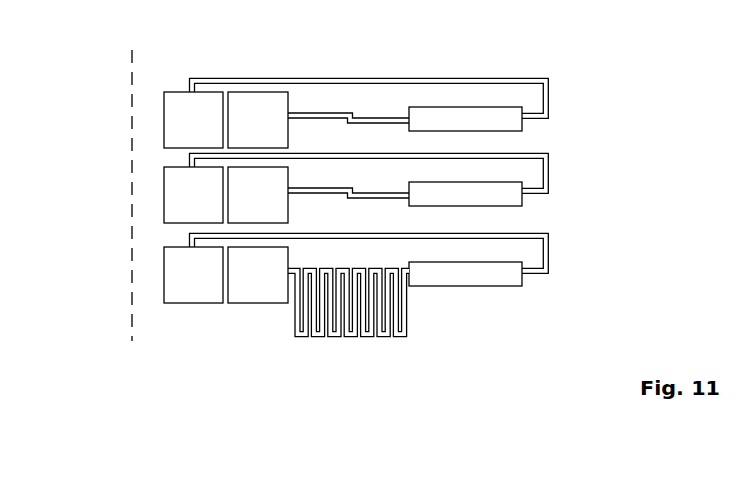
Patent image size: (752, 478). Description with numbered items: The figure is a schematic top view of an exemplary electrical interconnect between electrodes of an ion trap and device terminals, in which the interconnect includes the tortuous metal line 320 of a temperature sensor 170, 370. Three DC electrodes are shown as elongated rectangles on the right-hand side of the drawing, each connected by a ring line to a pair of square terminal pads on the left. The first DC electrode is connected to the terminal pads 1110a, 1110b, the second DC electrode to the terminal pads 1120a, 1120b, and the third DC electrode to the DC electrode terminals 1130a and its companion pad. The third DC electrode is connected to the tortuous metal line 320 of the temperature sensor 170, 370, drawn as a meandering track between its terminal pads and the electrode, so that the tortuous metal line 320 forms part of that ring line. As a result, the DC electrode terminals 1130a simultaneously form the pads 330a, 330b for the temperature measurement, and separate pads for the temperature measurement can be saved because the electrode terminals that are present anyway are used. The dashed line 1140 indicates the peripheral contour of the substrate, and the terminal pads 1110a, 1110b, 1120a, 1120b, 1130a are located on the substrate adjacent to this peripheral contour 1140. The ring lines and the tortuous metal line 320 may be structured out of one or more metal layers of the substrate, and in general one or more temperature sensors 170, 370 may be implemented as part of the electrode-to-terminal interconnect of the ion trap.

The peripheral contour 1140 is at (130, 58).
The terminal pad 1110a is at (175, 112).
The terminal pad 1110b is at (239, 136).
The terminal pad 1120a is at (177, 198).
The terminal pad 1120b is at (237, 213).
The DC electrode terminal 1130a is at (225, 330).
The pad 330a is at (200, 303).
The pad 330b is at (267, 303).
The tortuous metal line 320 is at (403, 315).
The temperature sensor 170 is at (365, 337).
The temperature sensor 370 is at (365, 337).